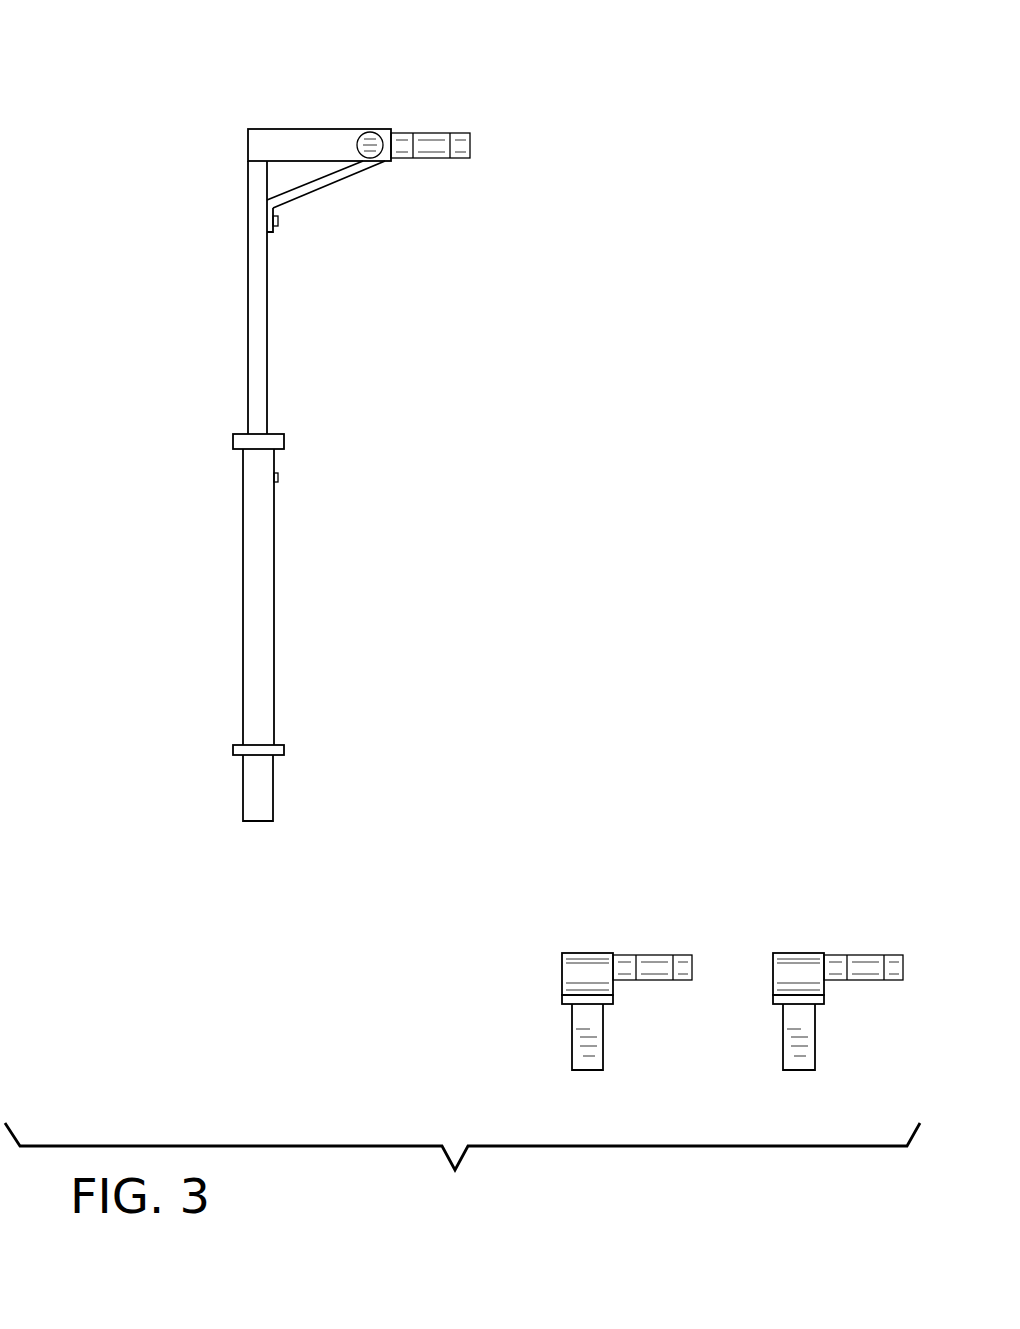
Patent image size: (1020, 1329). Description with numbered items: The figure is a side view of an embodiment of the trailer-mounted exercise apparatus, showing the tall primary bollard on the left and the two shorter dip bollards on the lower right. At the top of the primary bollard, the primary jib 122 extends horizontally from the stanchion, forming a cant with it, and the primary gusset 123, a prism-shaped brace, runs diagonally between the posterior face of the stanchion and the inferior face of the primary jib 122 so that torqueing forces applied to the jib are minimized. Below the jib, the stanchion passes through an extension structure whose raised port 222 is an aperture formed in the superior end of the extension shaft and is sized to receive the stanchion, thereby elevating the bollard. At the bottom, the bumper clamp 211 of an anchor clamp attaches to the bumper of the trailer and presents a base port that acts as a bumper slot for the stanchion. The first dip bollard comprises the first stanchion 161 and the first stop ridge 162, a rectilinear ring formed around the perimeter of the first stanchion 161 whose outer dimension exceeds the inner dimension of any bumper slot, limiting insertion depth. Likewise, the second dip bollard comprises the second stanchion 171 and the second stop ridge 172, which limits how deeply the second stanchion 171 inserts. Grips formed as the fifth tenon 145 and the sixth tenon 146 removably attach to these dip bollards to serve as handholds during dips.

The primary jib 122 is at (287, 137).
The primary gusset 123 is at (317, 185).
The raised port 222 is at (267, 595).
The bumper clamp 211 is at (265, 795).
The first stop ridge 162 is at (585, 962).
The first stanchion 161 is at (595, 1044).
The fifth tenon 145 is at (660, 958).
The second stop ridge 172 is at (787, 960).
The second stanchion 171 is at (805, 1044).
The sixth tenon 146 is at (867, 958).